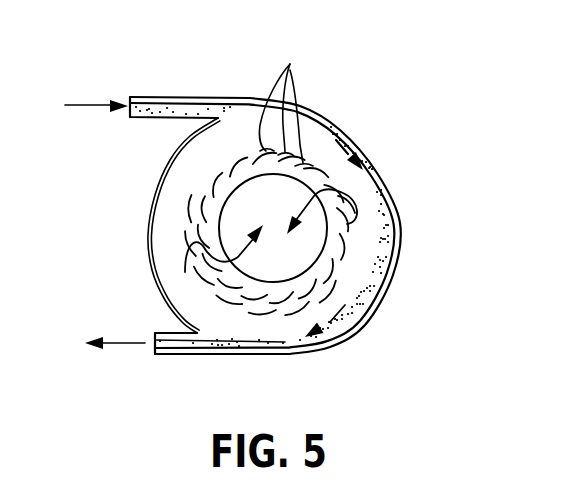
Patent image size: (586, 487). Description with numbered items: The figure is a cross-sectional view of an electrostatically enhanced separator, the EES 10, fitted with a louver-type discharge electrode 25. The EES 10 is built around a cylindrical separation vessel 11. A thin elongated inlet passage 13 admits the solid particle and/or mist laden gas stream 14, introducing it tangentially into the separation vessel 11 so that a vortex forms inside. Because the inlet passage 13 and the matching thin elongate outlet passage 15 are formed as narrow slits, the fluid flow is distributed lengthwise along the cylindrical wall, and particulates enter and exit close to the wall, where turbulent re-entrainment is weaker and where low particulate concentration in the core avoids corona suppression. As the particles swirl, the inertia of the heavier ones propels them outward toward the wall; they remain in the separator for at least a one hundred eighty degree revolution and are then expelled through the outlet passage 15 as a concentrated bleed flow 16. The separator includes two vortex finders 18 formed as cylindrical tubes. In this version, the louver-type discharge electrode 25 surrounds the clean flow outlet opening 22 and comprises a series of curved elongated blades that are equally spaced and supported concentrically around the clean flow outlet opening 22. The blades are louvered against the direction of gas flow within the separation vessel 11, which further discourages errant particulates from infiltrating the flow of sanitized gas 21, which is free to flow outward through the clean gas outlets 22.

The electrostatically enhanced separator (EES) 10 is at (410, 112).
The separation vessel 11 is at (243, 97).
The inlet passage 13 is at (173, 107).
The gas stream 14 is at (88, 104).
The outlet passage 15 is at (182, 345).
The bleed flow 16 is at (132, 343).
The vortex finder 18 is at (297, 263).
The sanitized gas 21 is at (222, 206).
The clean gas outlet 22 is at (316, 234).
The louver-type discharge electrode 25 is at (290, 64).